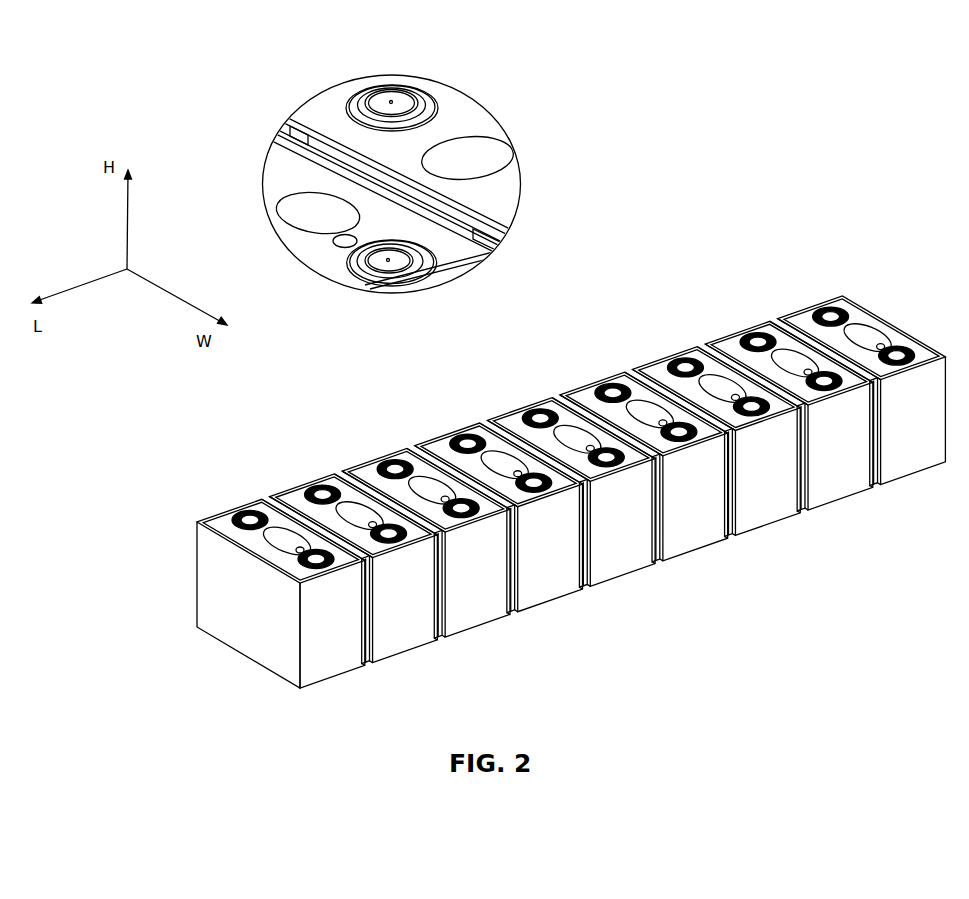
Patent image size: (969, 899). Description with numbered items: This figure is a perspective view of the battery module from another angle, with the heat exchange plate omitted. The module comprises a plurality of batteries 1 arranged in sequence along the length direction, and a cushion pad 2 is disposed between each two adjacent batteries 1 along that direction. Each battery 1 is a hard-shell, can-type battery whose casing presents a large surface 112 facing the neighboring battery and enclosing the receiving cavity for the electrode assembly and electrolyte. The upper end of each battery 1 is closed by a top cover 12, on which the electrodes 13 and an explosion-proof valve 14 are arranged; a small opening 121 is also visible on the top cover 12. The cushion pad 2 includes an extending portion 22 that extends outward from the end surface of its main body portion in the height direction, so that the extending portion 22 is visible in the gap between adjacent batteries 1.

The battery 1 is at (543, 354).
The cushion pad 2 is at (378, 650).
The top cover 12 is at (212, 520).
The electrode 13 is at (255, 507).
The explosion-proof valve 14 is at (293, 555).
The extending portion 22 is at (300, 137).
The large surface 112 is at (215, 603).
The electrolyte injection hole 121 is at (297, 555).